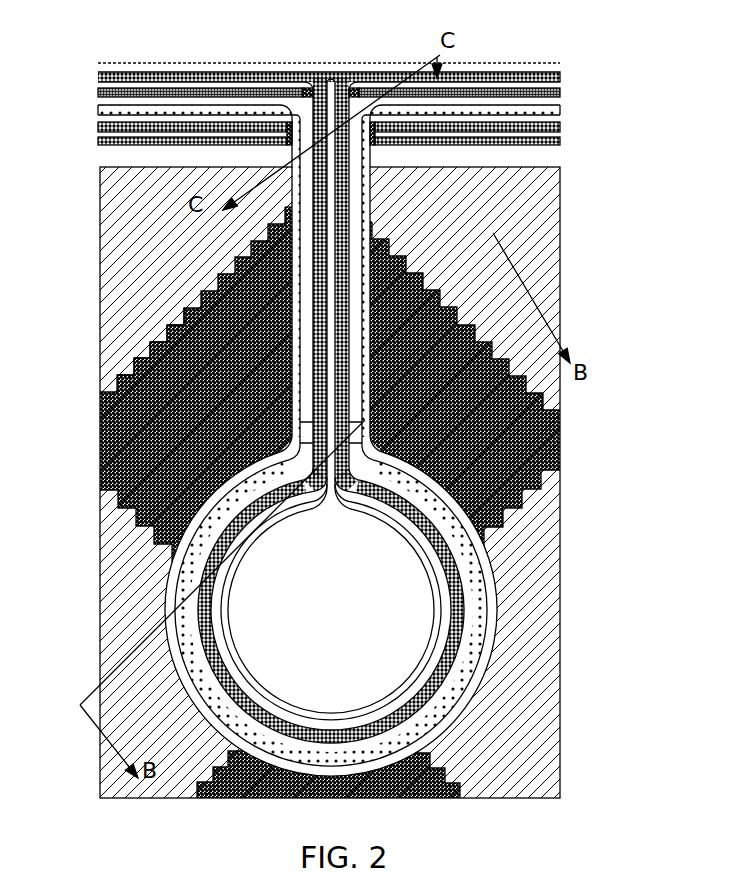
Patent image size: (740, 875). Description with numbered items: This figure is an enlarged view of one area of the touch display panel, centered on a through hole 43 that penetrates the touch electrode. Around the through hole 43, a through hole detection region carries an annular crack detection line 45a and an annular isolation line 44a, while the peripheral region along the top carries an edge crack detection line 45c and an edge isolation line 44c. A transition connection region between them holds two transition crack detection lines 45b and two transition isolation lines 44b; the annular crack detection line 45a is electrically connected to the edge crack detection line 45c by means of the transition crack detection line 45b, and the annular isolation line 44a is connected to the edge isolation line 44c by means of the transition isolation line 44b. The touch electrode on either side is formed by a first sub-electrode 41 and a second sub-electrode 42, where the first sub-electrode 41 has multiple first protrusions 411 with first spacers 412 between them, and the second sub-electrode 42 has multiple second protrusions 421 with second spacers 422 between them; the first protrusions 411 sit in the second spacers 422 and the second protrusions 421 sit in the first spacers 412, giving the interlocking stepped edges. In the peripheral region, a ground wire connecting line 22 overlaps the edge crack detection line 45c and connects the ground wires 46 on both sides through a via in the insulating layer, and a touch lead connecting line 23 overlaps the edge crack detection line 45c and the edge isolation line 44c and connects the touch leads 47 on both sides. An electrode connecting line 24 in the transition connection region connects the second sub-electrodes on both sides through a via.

The ground wire connecting line 22 is at (345, 95).
The touch lead connecting line 23 is at (303, 125).
The electrode connecting line 24 is at (352, 437).
The dielectric layer 41 is at (495, 237).
The conductive layer 42 is at (553, 482).
The through hole 43 is at (400, 612).
The annular isolation line 44a is at (472, 560).
The transition isolation line 44b is at (363, 250).
The edge isolation line 44c is at (515, 110).
The annular crack detection line 45a is at (455, 590).
The transition crack detection line 45b is at (341, 272).
The edge crack detection line 45c is at (543, 78).
The ground wire 46 is at (530, 92).
The touch lead 47 is at (138, 128).
The first protrusion 411 is at (158, 332).
The first spacer 412 is at (165, 320).
The second protrusion 421 is at (132, 337).
The second spacer 422 is at (148, 342).